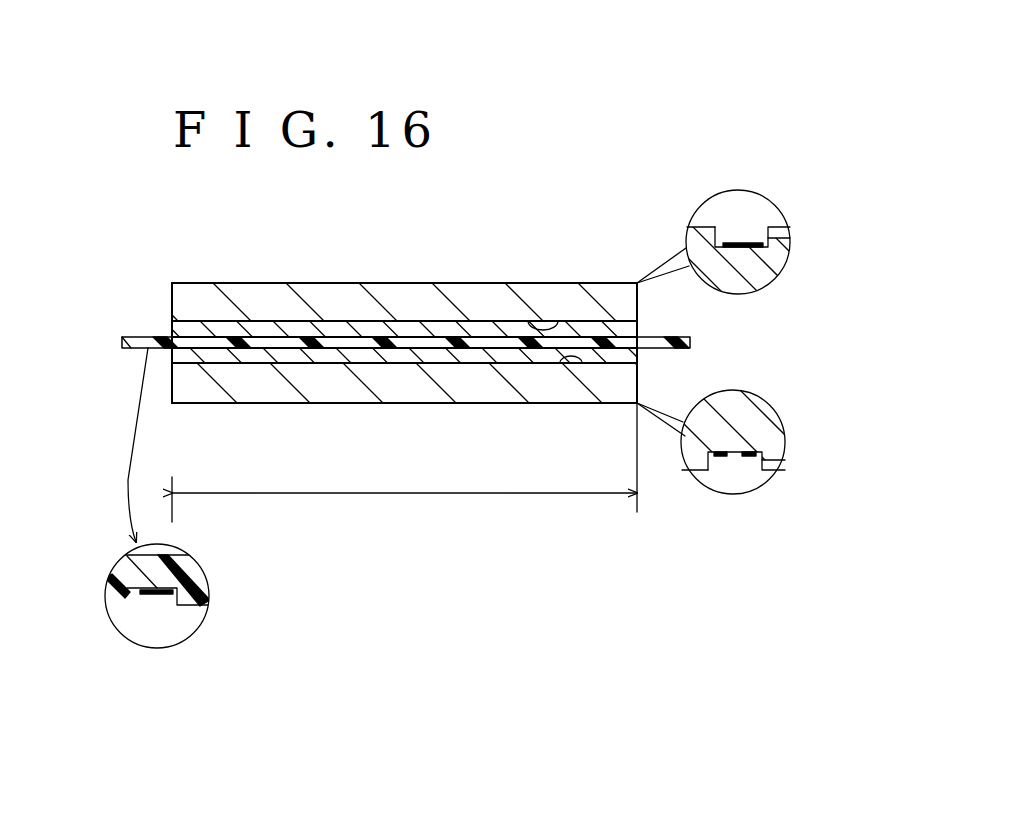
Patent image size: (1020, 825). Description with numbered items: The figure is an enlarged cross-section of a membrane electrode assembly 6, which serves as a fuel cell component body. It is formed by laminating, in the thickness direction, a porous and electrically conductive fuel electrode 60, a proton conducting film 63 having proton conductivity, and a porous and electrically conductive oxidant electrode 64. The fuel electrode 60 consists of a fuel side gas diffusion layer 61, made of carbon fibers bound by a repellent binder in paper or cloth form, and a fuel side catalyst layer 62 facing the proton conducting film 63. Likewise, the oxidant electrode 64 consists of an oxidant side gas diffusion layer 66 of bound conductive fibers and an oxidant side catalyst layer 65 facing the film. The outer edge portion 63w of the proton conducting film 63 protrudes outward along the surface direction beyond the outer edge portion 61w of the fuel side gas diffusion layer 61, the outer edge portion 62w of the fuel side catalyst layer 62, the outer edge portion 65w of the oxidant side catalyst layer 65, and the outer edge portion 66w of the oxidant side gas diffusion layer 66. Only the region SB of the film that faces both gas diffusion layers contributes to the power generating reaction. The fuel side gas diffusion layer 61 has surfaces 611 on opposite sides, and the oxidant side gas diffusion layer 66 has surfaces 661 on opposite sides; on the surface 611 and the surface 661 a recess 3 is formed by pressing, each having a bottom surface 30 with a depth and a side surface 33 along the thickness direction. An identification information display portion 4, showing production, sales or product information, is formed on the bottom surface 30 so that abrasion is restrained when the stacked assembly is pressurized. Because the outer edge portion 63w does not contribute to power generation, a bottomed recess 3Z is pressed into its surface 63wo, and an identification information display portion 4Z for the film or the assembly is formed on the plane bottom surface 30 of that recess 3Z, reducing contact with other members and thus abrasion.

The membrane electrode assembly 6 is at (422, 276).
The fuel electrode 60 is at (686, 291).
The fuel side gas diffusion layer 61 is at (639, 301).
The fuel side catalyst layer 62 is at (639, 330).
The proton conducting film 63 is at (122, 345).
The oxidant electrode 64 is at (686, 357).
The oxidant side catalyst layer 65 is at (639, 358).
The oxidant side gas diffusion layer 66 is at (639, 393).
The surface of fuel side gas diffusion layer 611 is at (552, 319).
The surface of oxidant side gas diffusion layer 661 is at (581, 368).
The outer edge portion of fuel side gas diffusion layer 61w is at (172, 300).
The outer edge portion of fuel side catalyst layer 62w is at (172, 328).
The outer edge portion of proton conducting film 63w is at (132, 350).
The surface of outer edge portion 63wo is at (193, 612).
The outer edge portion of oxidant side catalyst layer 65w is at (172, 355).
The outer edge portion of oxidant side gas diffusion layer 66w is at (172, 390).
The bottom surface 30 is at (722, 244).
The recess 3 is at (746, 230).
The identification information display portion 4 is at (770, 236).
The side surface 33 is at (775, 242).
The identification information display portion 4Z is at (140, 595).
The recess 3Z is at (152, 595).
The region SB is at (404, 462).